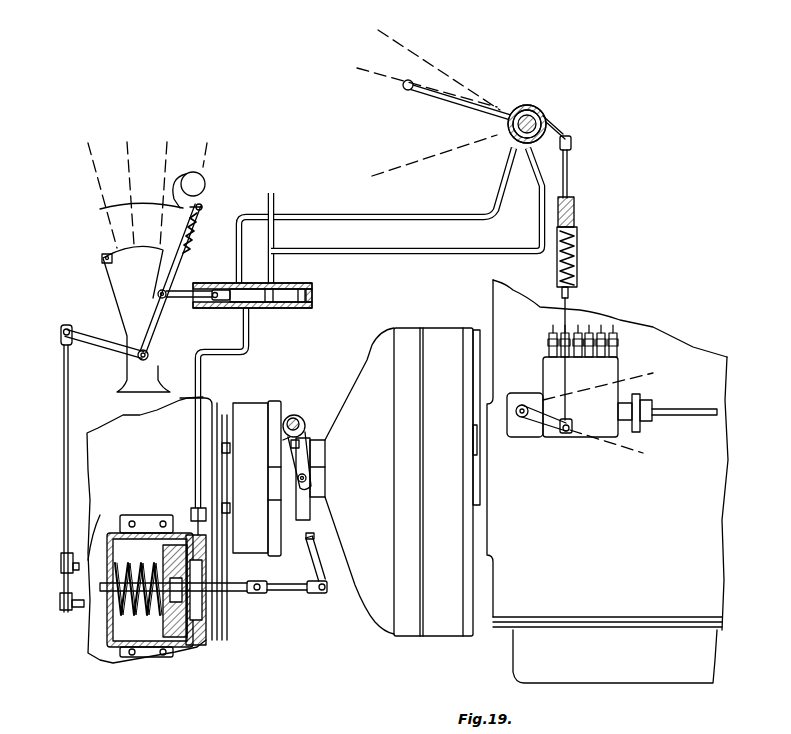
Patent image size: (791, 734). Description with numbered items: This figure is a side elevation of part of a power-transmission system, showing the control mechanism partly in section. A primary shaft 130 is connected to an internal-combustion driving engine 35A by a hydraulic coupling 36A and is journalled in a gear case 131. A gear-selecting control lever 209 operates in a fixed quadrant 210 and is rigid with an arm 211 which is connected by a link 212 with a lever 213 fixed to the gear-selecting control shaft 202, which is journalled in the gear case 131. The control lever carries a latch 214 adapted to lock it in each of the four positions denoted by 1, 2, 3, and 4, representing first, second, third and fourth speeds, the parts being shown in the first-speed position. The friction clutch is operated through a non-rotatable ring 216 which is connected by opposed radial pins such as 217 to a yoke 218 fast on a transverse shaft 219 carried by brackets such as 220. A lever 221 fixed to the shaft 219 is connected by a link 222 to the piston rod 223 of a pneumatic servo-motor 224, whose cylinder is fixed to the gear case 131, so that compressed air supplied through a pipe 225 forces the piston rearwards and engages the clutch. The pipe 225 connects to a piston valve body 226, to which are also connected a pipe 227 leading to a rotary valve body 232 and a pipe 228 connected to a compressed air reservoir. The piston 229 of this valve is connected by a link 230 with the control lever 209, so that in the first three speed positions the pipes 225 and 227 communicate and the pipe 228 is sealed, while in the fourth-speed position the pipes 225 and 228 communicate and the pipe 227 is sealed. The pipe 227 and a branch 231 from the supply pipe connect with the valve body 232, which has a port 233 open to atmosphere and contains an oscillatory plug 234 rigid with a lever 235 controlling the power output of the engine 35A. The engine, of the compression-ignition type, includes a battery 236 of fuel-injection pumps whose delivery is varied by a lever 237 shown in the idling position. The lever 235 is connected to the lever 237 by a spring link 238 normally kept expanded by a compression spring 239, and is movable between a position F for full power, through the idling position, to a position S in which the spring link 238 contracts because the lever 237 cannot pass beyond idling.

The first-speed position 1 is at (209, 146).
The second-speed position 2 is at (164, 186).
The third-speed position 3 is at (127, 185).
The fourth-speed position 4 is at (99, 186).
The position S is at (428, 67).
The position F is at (423, 160).
The primary shaft 130 is at (320, 475).
The gear case 131 is at (203, 397).
The gear-selecting control shaft 202 is at (73, 612).
The gear-selecting control lever 209 is at (184, 230).
The fixed quadrant 210 is at (113, 279).
The arm 211 is at (112, 337).
The link 212 is at (70, 388).
The lever 213 is at (101, 517).
The latch 214 is at (100, 209).
The non-rotatable ring 216 is at (296, 520).
The radial pins 217 is at (306, 486).
The yoke 218 is at (299, 416).
The transverse shaft 219 is at (287, 423).
The brackets 220 is at (220, 397).
The lever 221 is at (284, 440).
The link 222 is at (285, 592).
The piston rod 223 is at (230, 592).
The pneumatic servo-motor 224 is at (150, 655).
The pipe 225 is at (195, 442).
The piston valve body 226 is at (295, 283).
The pipe 227 is at (236, 253).
The pipe 228 is at (274, 204).
The piston 229 is at (313, 296).
The link 230 is at (187, 298).
The branch 231 is at (427, 250).
The rotary valve body 232 is at (547, 122).
The port 233 is at (504, 137).
The oscillatory plug 234 is at (530, 108).
The lever 235 is at (450, 107).
The battery of fuel-injection pumps 236 is at (620, 368).
The lever 237 is at (543, 428).
The spring link 238 is at (578, 273).
The compression spring 239 is at (578, 248).
The internal-combustion driving engine 35A is at (627, 318).
The hydraulic coupling 36A is at (458, 328).